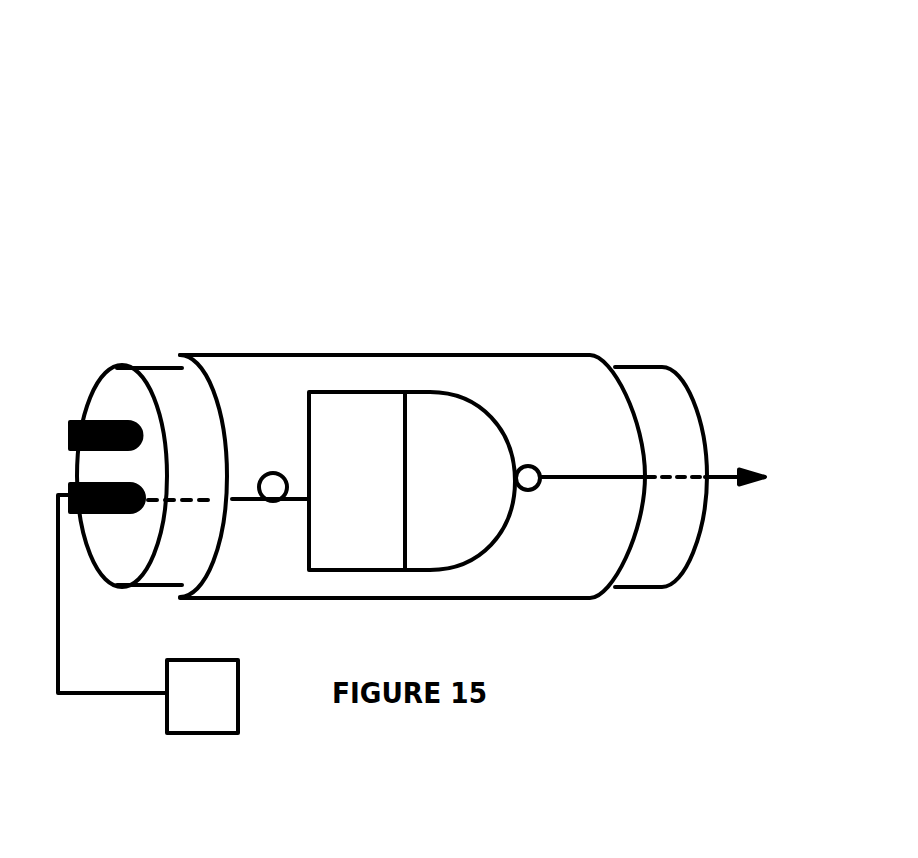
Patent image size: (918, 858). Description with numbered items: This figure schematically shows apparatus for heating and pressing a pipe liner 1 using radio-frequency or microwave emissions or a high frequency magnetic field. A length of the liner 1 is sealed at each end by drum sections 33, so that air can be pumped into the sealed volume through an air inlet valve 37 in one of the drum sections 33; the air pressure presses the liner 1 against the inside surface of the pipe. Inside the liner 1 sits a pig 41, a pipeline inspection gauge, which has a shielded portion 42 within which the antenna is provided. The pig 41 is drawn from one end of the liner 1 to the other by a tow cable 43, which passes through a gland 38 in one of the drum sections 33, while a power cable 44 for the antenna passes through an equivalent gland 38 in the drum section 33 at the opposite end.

The liner 1 is at (528, 333).
The drum section 33 is at (170, 339).
The air inlet valve 37 is at (120, 397).
The gland 38 is at (112, 535).
The pig 41 is at (374, 371).
The shielded portion 42 is at (462, 378).
The tow cable 43 is at (729, 499).
The power cable 44 is at (280, 452).